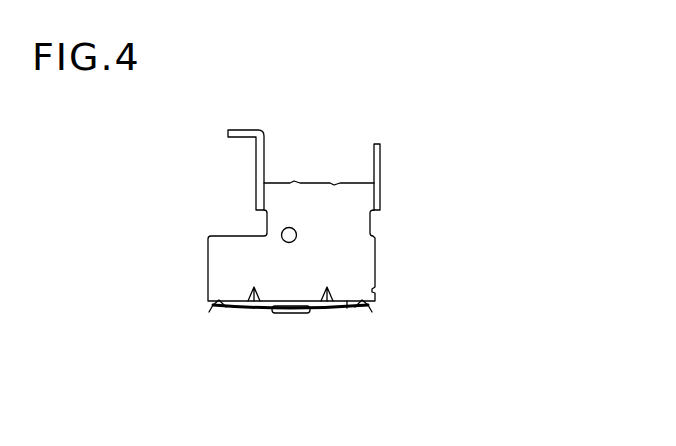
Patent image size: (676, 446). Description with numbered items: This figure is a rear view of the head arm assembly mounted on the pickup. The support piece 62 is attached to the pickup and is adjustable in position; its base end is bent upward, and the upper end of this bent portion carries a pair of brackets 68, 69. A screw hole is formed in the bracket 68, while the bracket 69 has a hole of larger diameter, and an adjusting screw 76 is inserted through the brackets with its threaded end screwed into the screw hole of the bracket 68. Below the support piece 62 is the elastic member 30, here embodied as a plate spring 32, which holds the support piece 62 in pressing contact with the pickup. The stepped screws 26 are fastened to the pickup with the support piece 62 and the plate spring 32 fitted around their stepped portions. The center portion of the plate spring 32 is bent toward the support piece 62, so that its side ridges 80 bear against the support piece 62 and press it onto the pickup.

The stepped screw 26 is at (280, 312).
The elastic member 30 is at (363, 360).
The plate spring 32 is at (347, 310).
The support piece 62 is at (345, 203).
The bracket 68 is at (250, 165).
The bracket 69 is at (376, 155).
The adjusting screw 76 is at (297, 235).
The ridge 80 is at (363, 308).